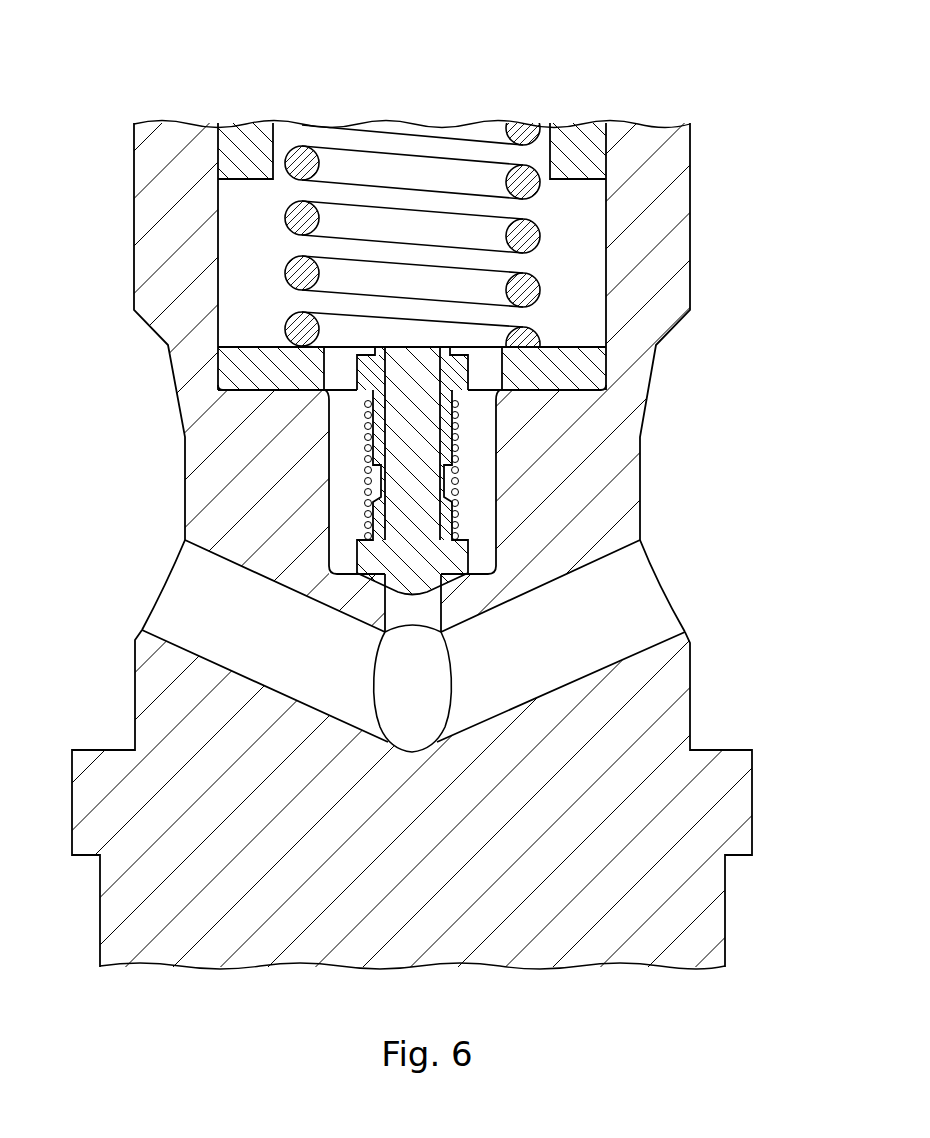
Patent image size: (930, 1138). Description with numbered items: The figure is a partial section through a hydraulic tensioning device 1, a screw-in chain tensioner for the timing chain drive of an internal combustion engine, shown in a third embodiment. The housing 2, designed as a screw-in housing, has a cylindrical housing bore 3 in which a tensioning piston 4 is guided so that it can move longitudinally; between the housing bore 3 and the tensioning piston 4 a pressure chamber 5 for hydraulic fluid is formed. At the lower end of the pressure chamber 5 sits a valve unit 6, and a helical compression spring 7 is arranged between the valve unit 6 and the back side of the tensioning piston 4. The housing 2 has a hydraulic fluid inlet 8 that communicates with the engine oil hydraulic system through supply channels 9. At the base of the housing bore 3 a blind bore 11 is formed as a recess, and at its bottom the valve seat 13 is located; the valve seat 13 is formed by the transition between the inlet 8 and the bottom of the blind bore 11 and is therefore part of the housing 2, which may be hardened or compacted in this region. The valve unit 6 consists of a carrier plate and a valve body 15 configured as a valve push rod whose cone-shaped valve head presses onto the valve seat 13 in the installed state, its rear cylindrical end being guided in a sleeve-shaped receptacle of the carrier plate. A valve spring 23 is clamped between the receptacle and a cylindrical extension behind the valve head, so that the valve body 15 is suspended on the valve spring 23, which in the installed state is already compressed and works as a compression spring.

The tensioning device 1 is at (704, 58).
The housing 2 is at (150, 690).
The housing bore 3 is at (590, 213).
The tensioning piston 4 is at (247, 130).
The pressure chamber 5 is at (243, 242).
The valve unit 6 is at (612, 361).
The helical compression spring 7 is at (532, 234).
The hydraulic fluid inlet 8 is at (413, 608).
The supply channels 9 is at (176, 578).
The blind bore 11 is at (484, 470).
The valve seat 13 is at (453, 583).
The valve body 15 is at (352, 461).
The valve spring 23 is at (365, 422).